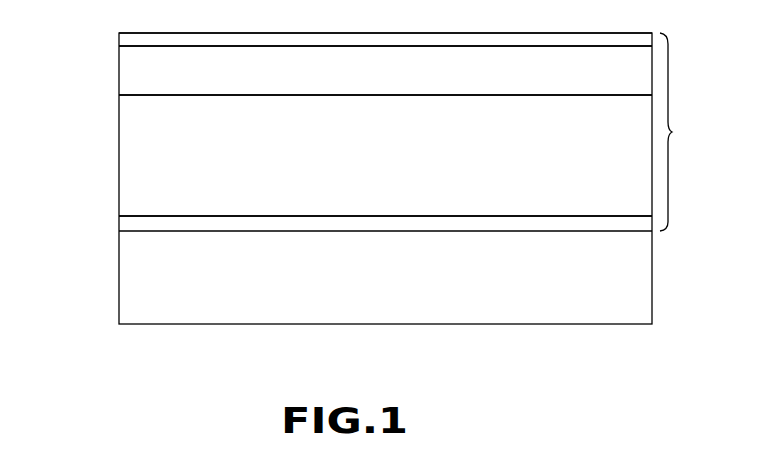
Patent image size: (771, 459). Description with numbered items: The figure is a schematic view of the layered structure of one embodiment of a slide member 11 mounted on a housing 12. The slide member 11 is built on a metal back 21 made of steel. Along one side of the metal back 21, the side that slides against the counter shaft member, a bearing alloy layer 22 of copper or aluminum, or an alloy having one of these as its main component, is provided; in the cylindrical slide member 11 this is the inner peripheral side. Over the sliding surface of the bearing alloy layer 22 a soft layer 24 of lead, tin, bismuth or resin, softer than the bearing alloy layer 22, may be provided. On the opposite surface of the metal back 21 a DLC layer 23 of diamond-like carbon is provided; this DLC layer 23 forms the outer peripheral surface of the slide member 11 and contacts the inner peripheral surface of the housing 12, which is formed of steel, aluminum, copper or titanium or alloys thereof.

The slide member 11 is at (672, 132).
The housing 12 is at (119, 300).
The metal back 21 is at (119, 156).
The bearing alloy layer 22 is at (119, 66).
The DLC layer 23 is at (119, 221).
The soft layer 24 is at (119, 40).